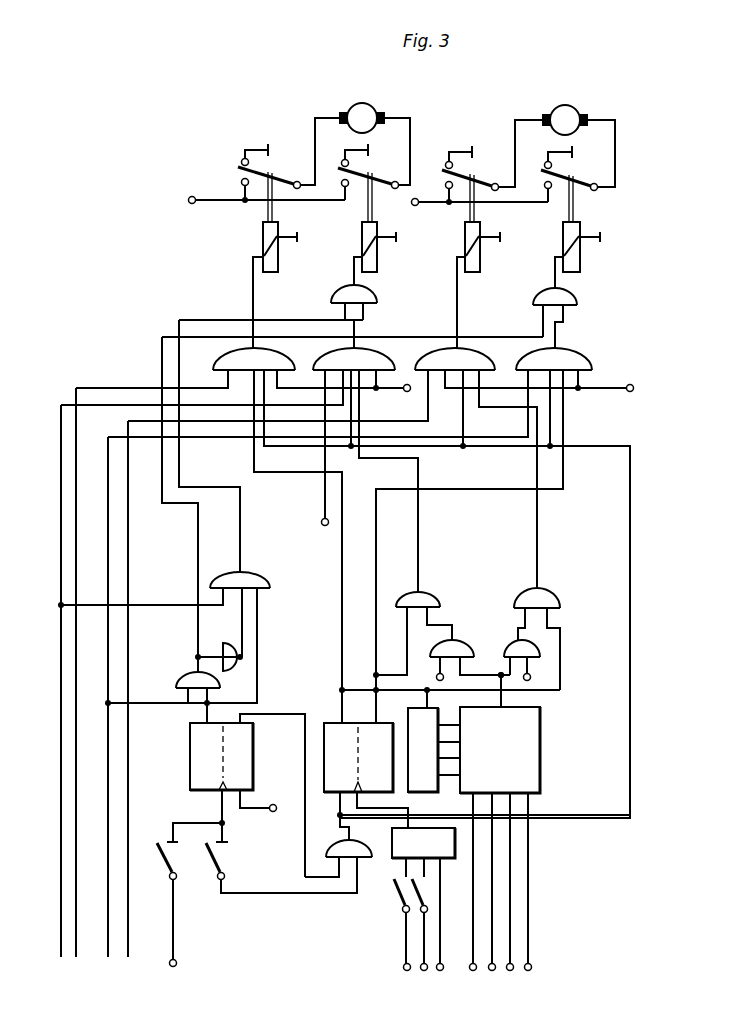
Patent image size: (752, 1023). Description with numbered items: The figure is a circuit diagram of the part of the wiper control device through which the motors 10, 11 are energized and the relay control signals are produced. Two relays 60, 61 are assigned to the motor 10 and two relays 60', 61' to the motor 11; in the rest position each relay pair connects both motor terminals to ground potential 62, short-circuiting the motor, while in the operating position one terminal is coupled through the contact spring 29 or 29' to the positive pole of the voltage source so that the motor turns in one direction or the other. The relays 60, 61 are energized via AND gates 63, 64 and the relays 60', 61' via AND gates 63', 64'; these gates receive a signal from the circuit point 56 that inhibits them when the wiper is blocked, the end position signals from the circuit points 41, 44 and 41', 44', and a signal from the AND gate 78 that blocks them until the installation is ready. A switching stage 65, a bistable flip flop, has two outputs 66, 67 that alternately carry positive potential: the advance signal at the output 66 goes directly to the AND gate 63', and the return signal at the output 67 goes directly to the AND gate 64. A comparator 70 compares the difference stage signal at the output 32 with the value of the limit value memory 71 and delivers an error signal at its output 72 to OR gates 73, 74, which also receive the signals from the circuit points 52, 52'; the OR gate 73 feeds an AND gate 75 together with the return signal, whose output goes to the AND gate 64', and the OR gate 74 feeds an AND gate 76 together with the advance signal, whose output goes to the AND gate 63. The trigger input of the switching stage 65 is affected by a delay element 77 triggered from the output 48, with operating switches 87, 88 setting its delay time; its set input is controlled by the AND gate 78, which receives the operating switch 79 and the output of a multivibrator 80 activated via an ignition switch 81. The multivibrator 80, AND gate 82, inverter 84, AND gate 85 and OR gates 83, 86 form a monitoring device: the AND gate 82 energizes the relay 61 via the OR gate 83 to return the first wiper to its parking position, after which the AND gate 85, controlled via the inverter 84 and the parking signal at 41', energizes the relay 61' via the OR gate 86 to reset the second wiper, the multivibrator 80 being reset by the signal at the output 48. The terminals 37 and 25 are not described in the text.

The motor 10 is at (554, 112).
The motor 11 is at (354, 111).
The ground potential 62 is at (262, 150).
The contact spring 29 is at (467, 211).
The contact spring 29' is at (251, 220).
The relay 60 is at (465, 285).
The relay 60' is at (257, 285).
The relay 61 is at (564, 255).
The relay 61' is at (361, 253).
The OR gate 86 is at (378, 291).
The OR gate 83 is at (533, 297).
The AND gate 63 is at (377, 467).
The AND gate 63' is at (353, 582).
The AND gate 64 is at (350, 534).
The AND gate 64' is at (239, 468).
The circuit point 56 is at (407, 392).
The terminal 37 is at (321, 522).
The circuit point 41 is at (97, 714).
The circuit point 41' is at (48, 698).
The circuit point 44 is at (118, 706).
The circuit point 44' is at (66, 689).
The AND gate 85 is at (232, 578).
The inverter 84 is at (226, 651).
The AND gate 82 is at (184, 682).
The multivibrator 80 is at (189, 760).
The output 48 is at (273, 813).
The ignition switch 81 is at (168, 866).
The operating switch 79 is at (225, 856).
The supply terminal 25 is at (178, 965).
The AND gate 78 is at (336, 851).
The switching stage 65 is at (467, 756).
The output 66 is at (340, 721).
The output 67 is at (383, 706).
The limit value memory 71 is at (434, 760).
The comparator 70 is at (521, 817).
The output 72 is at (501, 704).
The output 32 is at (473, 971).
The delay element 77 is at (434, 855).
The operating switch 87 is at (400, 896).
The operating switch 88 is at (415, 902).
The AND gate 75 is at (413, 598).
The AND gate 76 is at (529, 597).
The OR gate 73 is at (463, 650).
The OR gate 74 is at (507, 650).
The circuit point 52 is at (427, 683).
The circuit point 52' is at (546, 684).